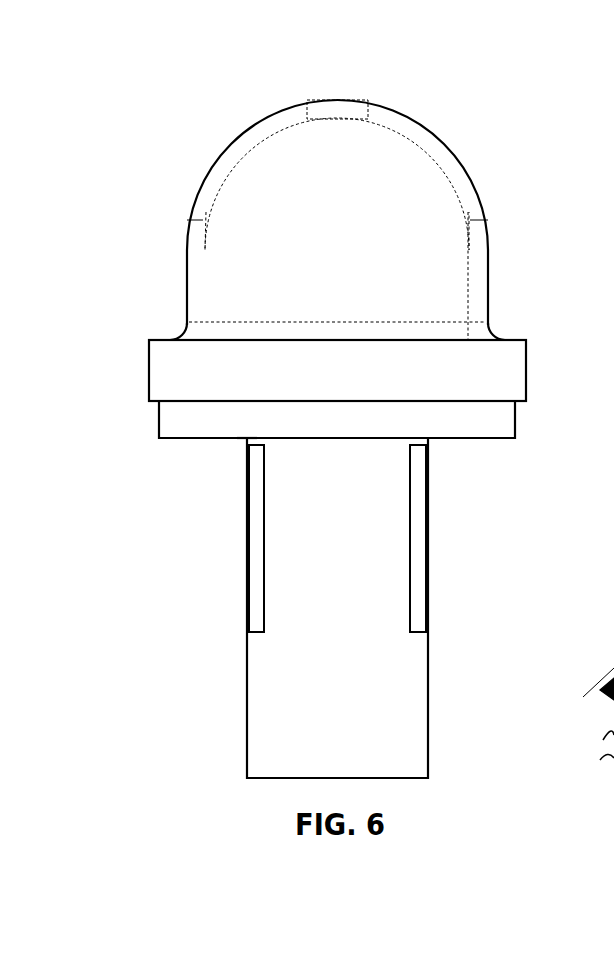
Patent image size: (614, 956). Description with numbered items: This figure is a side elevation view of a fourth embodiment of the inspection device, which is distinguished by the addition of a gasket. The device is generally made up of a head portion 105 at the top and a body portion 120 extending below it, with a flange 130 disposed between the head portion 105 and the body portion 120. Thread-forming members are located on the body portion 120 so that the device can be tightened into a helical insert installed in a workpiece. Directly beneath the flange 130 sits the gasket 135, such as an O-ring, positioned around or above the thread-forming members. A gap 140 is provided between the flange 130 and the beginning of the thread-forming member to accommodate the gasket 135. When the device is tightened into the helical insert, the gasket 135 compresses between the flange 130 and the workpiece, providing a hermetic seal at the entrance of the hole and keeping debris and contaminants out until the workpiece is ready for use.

The head portion 105 is at (433, 158).
The flange 130 is at (518, 362).
The gasket 135 is at (505, 417).
The gap 140 is at (246, 441).
The body portion 120 is at (254, 658).